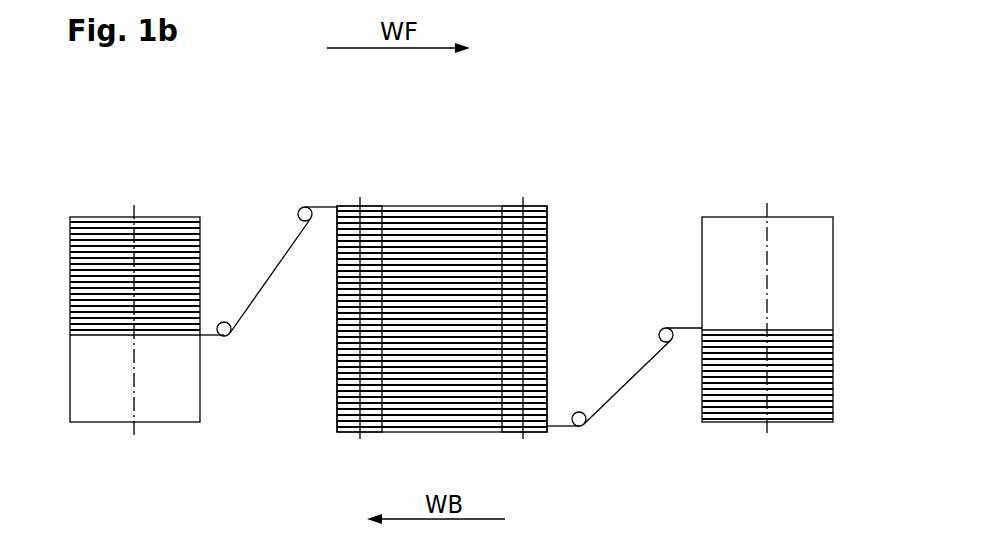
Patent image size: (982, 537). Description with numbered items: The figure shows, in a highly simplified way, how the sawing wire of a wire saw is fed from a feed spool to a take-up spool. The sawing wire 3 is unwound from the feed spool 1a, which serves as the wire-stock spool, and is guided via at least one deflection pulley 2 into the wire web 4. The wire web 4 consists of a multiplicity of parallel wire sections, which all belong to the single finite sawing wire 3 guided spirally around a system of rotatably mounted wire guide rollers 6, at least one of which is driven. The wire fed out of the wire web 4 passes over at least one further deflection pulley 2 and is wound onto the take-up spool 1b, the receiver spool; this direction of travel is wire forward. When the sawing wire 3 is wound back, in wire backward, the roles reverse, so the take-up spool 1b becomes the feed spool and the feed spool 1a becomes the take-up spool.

The feed spool 1a is at (89, 212).
The take-up spool 1b is at (788, 212).
The deflection pulley 2 is at (227, 322).
The sawing wire 3 is at (262, 277).
The wire web 4 is at (469, 202).
The wire guide rollers 6 is at (305, 207).